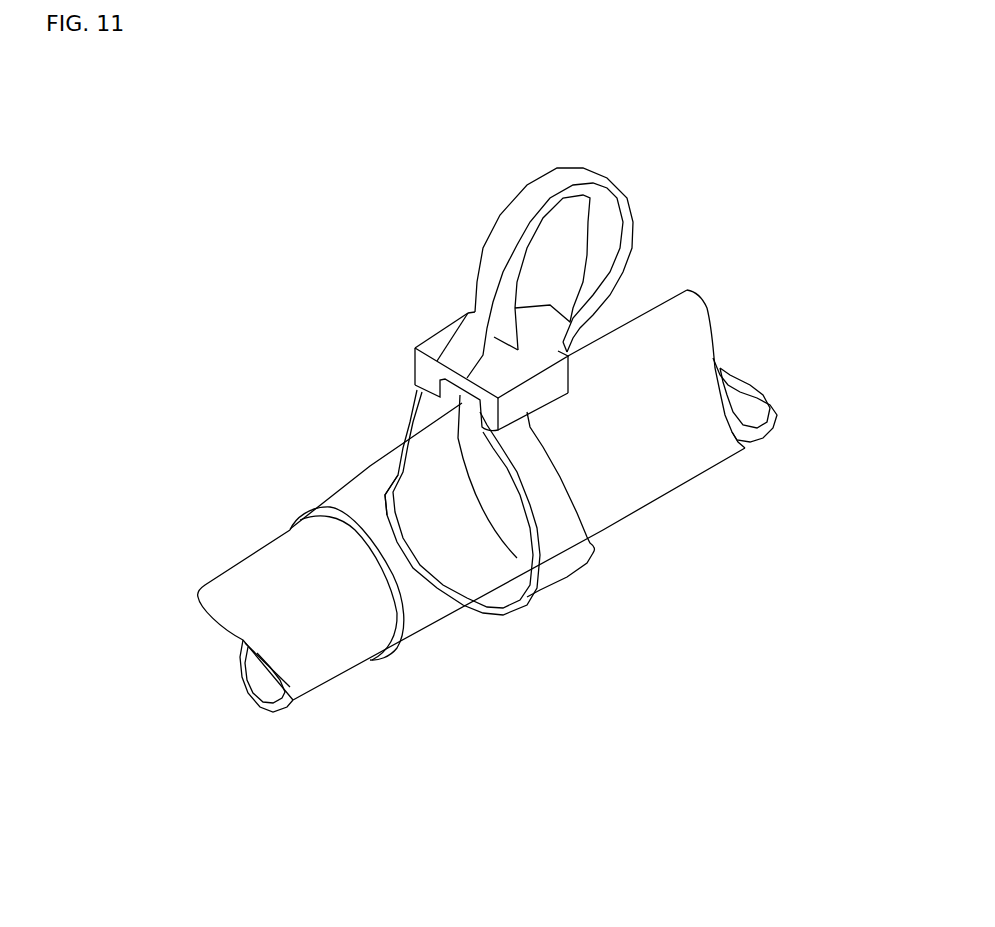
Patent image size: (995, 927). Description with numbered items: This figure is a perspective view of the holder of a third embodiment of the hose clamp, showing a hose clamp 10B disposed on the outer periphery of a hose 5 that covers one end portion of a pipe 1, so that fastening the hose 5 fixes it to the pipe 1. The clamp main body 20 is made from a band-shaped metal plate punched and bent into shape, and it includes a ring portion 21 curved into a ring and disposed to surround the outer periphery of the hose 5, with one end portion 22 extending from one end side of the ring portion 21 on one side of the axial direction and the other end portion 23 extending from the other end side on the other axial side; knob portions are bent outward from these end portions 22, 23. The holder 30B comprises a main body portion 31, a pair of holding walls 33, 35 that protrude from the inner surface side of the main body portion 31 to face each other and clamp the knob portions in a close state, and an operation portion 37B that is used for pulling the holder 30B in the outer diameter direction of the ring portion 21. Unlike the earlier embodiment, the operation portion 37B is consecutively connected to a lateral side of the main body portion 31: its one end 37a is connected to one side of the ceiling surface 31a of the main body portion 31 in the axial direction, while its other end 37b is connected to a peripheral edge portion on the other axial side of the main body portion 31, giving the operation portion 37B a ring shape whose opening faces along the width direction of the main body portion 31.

The pipe 1 is at (328, 681).
The hose 5 is at (710, 468).
The hose clamp 10B is at (387, 378).
The clamp main body 20 is at (500, 630).
The ring portion 21 is at (470, 612).
The one end portion 22 is at (563, 483).
The other end portion 23 is at (407, 450).
The holder 30B is at (600, 160).
The main body portion 31 is at (455, 396).
The ceiling surface 31a is at (565, 358).
The holding wall 33 is at (415, 374).
The holding wall 35 is at (553, 385).
The operation portion 37B is at (525, 200).
The one end 37a is at (462, 347).
The other end 37b is at (577, 323).